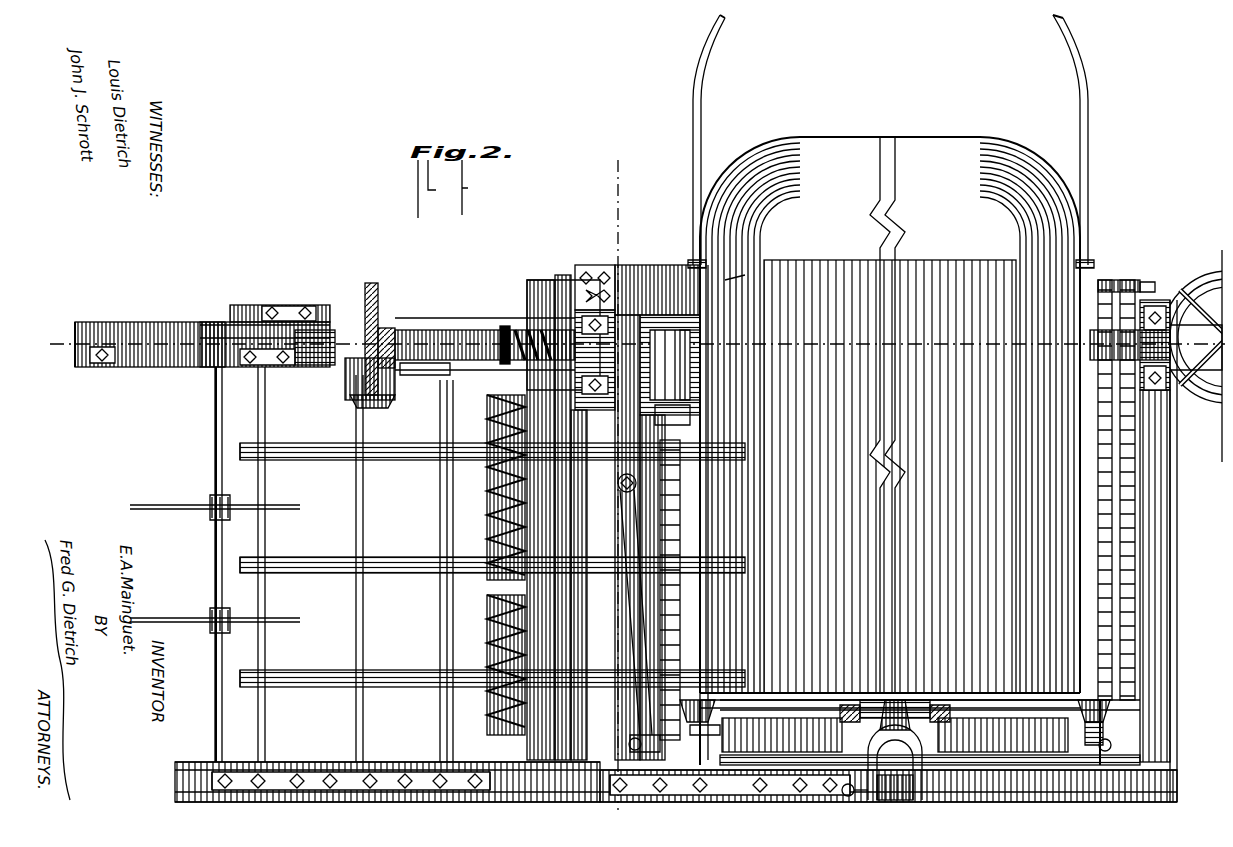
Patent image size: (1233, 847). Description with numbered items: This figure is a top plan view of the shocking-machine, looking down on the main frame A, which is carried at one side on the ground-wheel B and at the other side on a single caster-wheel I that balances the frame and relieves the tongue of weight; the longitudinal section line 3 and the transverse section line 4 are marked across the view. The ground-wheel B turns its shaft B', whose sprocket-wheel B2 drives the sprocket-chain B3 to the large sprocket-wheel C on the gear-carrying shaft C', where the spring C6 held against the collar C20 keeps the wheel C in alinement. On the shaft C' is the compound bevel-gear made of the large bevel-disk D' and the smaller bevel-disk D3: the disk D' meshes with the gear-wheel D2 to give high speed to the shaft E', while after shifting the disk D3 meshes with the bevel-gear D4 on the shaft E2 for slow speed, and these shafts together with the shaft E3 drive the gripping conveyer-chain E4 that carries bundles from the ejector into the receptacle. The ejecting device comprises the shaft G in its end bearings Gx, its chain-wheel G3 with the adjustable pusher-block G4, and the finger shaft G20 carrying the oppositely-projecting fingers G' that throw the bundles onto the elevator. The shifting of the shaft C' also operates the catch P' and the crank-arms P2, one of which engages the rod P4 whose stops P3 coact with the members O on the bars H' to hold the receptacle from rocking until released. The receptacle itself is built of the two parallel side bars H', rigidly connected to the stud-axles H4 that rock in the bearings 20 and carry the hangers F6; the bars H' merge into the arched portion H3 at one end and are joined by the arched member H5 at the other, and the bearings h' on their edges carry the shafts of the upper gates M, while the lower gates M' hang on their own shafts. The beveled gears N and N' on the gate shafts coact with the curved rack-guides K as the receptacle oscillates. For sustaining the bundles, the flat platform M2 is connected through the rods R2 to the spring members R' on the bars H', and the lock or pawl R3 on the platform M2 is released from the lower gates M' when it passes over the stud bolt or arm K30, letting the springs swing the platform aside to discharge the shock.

The section line 3 3 is at (620, 485).
The section line 4 4 is at (627, 344).
The main frame A is at (420, 762).
The finger shaft G20 is at (216, 655).
The end bearings Gx is at (262, 318).
The chain-wheel G3 is at (300, 320).
The adjustable pusher-block G4 is at (300, 367).
The ejector shaft G is at (271, 564).
The ejecting fingers G' is at (216, 564).
The high-speed conveyer shaft E' is at (373, 568).
The conveyer-chain E4 is at (415, 460).
The slow-speed conveyer shaft E2 is at (440, 500).
The large bevel-disk D' is at (365, 326).
The small bevel-disk D3 is at (388, 328).
The bevel-gear D4 is at (405, 375).
The gear-wheel D2 is at (365, 408).
The gear-carrying shaft C' is at (485, 332).
The collar C20 is at (505, 326).
The spring C6 is at (525, 330).
The large sprocket-wheel C is at (555, 517).
The ground-wheel shaft B' is at (465, 565).
The ground-wheel B is at (546, 520).
The sprocket-wheel B2 is at (573, 585).
The sprocket-chain B3 is at (560, 495).
The bearings 20 is at (595, 265).
The stud-axles H4 is at (630, 300).
The catch P' is at (670, 329).
The crank-arms P2 is at (640, 412).
The stops P3 is at (680, 380).
The conveyer shaft E3 is at (700, 345).
The hangers F6 is at (760, 300).
The rack-guides K is at (680, 505).
The bearings h' is at (1132, 490).
The upper gates M is at (890, 422).
The side bars H' is at (902, 141).
The arched portion H3 is at (712, 50).
The caster-wheel I is at (1210, 272).
The lower gates M' is at (909, 535).
The spring members R' is at (895, 728).
The arched member H5 is at (800, 760).
The rod P4 is at (818, 770).
The stud bolt or arm K30 is at (905, 770).
The platform M2 is at (815, 700).
The rods R2 is at (850, 705).
The lock or pawl R3 is at (900, 700).
The beveled gears N is at (895, 712).
The beveled gears N' is at (1125, 738).
The members O is at (700, 752).